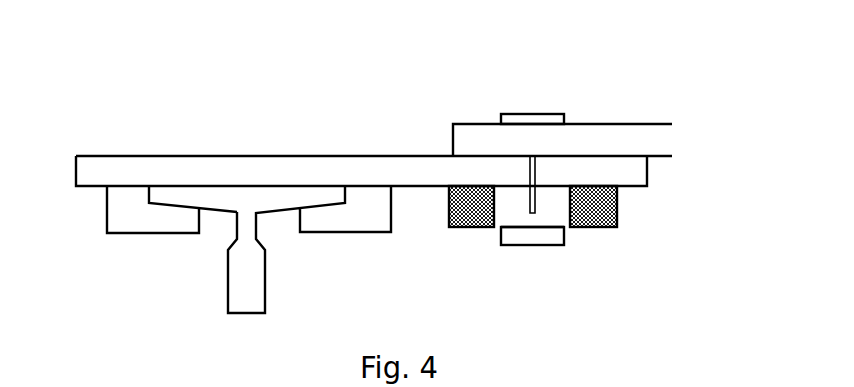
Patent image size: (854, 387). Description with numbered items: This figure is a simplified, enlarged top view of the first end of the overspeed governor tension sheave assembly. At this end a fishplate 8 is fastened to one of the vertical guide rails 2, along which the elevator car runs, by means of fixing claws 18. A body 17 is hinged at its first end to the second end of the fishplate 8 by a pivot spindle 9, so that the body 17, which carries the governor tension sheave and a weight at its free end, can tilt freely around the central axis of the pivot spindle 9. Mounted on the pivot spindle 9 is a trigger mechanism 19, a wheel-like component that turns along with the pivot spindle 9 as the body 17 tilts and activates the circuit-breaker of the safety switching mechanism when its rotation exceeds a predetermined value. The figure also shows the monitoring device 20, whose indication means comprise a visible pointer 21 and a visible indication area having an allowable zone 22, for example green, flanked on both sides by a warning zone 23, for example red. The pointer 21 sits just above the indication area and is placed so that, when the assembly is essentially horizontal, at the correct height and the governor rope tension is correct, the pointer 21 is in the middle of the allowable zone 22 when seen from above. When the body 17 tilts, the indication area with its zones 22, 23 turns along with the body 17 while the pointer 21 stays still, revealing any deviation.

The guide rail 2 is at (233, 290).
The fishplate 8 is at (125, 163).
The pivot spindle 9 is at (535, 120).
The body 17 is at (643, 130).
The fixing claw 18 is at (113, 218).
The trigger mechanism 19 is at (636, 211).
The monitoring device 20 is at (605, 251).
The pointer 21 is at (535, 212).
The allowable zone 22 is at (500, 222).
The warning zone 23 is at (462, 223).